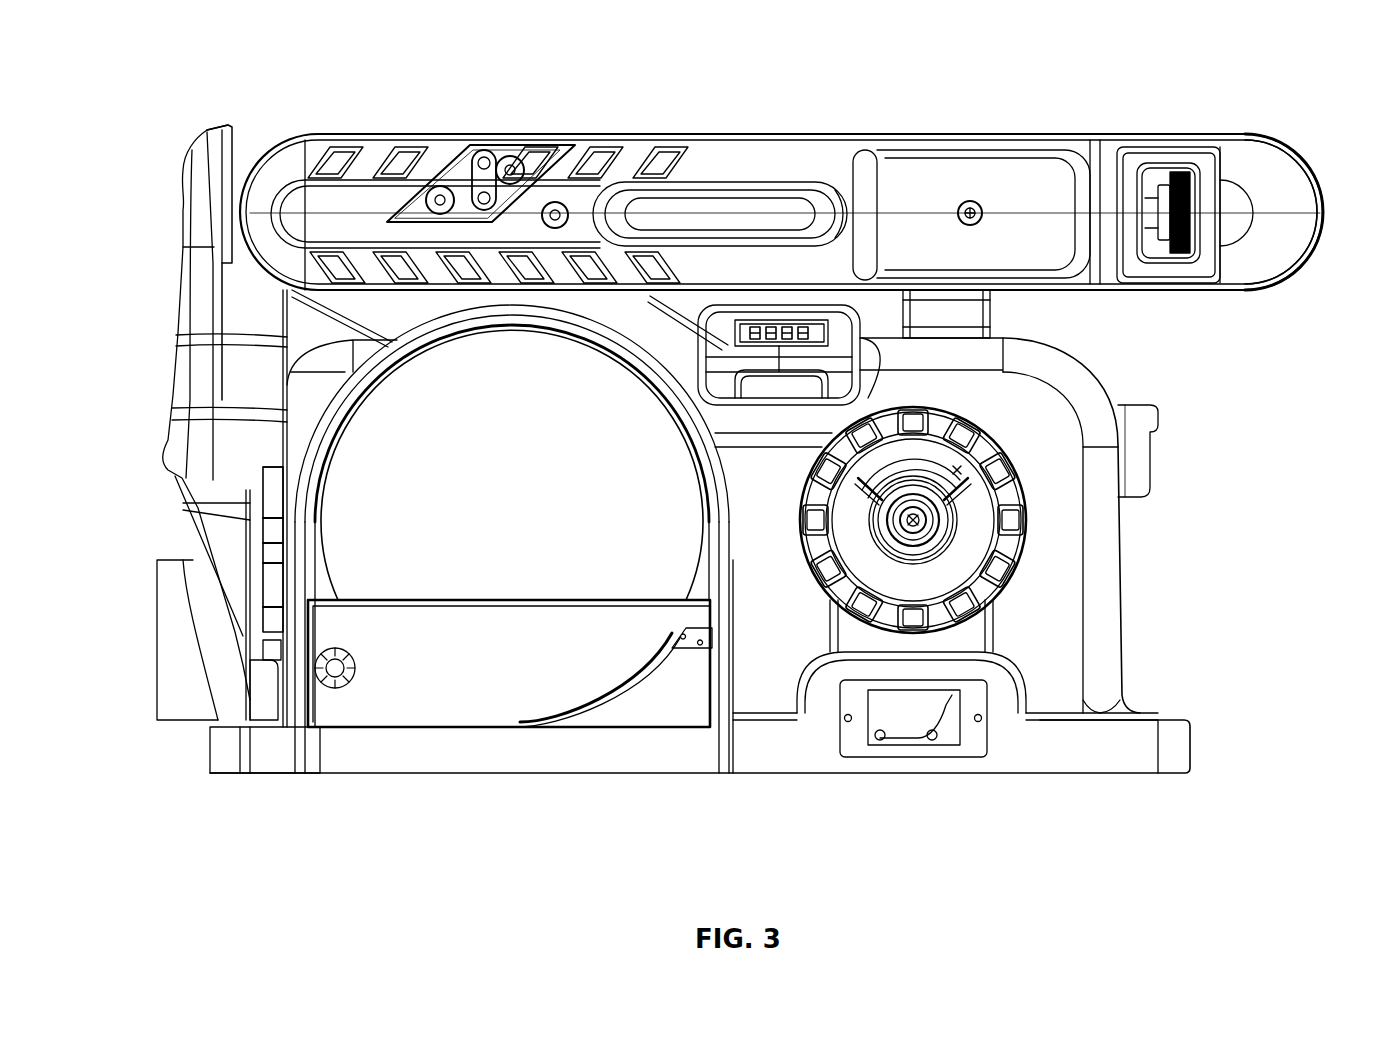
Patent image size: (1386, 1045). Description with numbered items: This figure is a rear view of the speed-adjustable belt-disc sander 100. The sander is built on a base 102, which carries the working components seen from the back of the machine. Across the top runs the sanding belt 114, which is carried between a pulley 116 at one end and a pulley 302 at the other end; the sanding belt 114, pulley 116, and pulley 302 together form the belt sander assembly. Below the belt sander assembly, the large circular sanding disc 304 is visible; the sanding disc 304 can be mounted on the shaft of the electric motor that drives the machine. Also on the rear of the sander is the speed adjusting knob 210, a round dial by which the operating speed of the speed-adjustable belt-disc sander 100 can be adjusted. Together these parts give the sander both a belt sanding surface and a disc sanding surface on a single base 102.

The speed-adjustable belt-disc sander 100 is at (1254, 96).
The base 102 is at (1085, 386).
The sanding belt 114 is at (806, 134).
The pulley 116 is at (1300, 160).
The speed adjusting knob 210 is at (1000, 585).
The pulley 302 is at (314, 140).
The sanding disc 304 is at (348, 488).